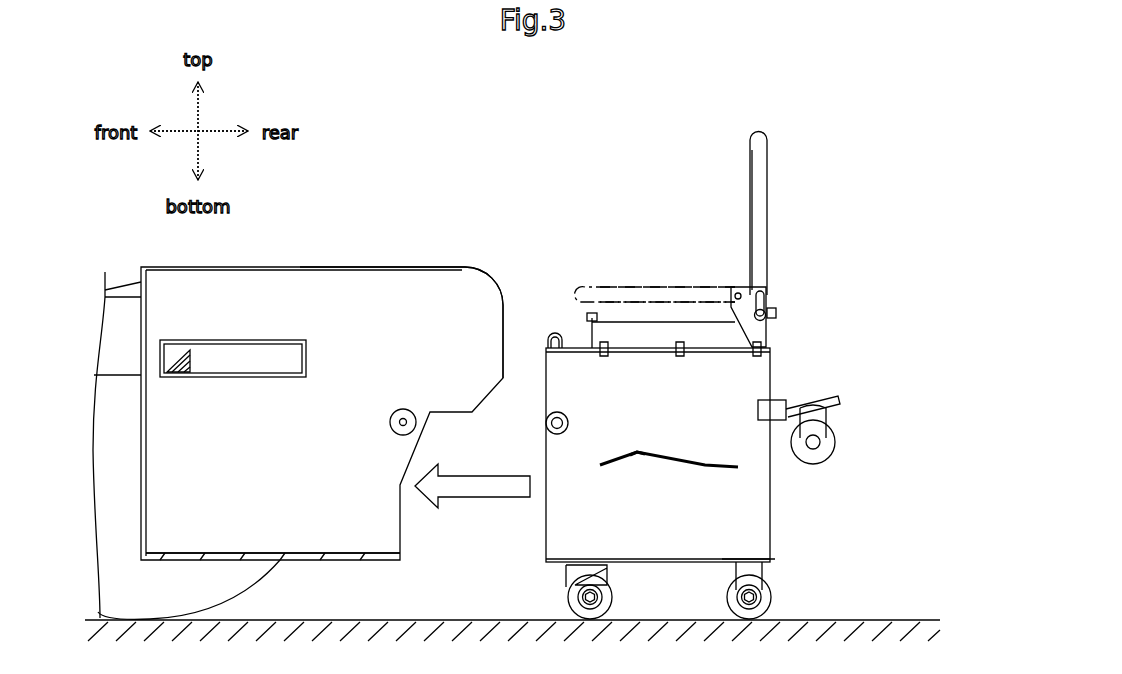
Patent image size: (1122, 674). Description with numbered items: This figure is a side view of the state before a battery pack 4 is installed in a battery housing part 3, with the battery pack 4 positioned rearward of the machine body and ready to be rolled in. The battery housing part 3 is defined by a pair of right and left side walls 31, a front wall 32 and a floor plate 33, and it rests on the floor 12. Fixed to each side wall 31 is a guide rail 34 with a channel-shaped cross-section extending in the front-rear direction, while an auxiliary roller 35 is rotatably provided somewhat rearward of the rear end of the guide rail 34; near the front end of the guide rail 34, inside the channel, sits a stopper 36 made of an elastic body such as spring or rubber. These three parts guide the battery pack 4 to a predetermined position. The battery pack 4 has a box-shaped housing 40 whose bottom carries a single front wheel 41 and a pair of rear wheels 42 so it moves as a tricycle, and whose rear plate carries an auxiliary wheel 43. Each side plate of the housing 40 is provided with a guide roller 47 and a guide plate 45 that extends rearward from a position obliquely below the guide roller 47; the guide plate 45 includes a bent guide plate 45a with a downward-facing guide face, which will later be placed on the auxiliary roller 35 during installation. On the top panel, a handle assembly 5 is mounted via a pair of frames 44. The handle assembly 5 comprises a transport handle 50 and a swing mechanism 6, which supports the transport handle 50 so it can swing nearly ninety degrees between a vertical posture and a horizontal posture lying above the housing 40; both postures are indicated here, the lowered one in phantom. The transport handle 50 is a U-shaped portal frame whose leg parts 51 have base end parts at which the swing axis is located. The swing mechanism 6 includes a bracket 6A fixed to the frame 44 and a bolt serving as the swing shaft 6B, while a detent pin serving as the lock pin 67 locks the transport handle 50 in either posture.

The battery housing part 3 is at (362, 264).
The side wall 31 is at (437, 287).
The front wall 32 is at (140, 490).
The floor plate 33 is at (235, 553).
The guide rail 34 is at (272, 340).
The auxiliary roller 35 is at (406, 409).
The stopper 36 is at (190, 363).
The floor 12 is at (240, 580).
The battery pack 4 is at (670, 347).
The housing 40 is at (538, 364).
The front wheel 41 is at (562, 600).
The rear wheel 42 is at (775, 600).
The auxiliary wheel 43 is at (838, 455).
The frame 44 is at (647, 325).
The guide plate 45 is at (666, 471).
The bent guide plate 45a is at (641, 452).
The guide roller 47 is at (560, 412).
The handle assembly 5 is at (777, 149).
The transport handle 50 is at (727, 190).
The leg part 51 is at (767, 185).
The swing mechanism 6 is at (777, 283).
The bracket 6A is at (748, 287).
The swing shaft 6B is at (770, 318).
The lock pin 67 is at (768, 290).